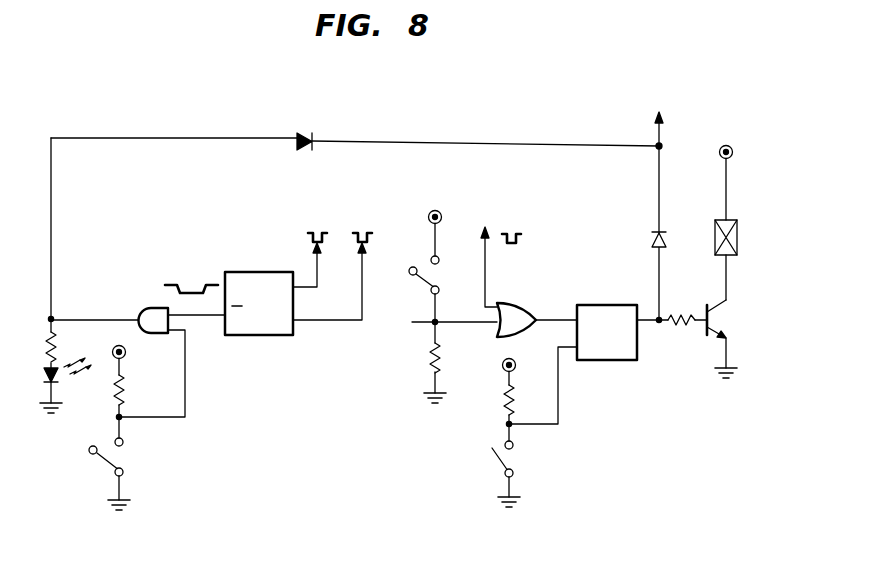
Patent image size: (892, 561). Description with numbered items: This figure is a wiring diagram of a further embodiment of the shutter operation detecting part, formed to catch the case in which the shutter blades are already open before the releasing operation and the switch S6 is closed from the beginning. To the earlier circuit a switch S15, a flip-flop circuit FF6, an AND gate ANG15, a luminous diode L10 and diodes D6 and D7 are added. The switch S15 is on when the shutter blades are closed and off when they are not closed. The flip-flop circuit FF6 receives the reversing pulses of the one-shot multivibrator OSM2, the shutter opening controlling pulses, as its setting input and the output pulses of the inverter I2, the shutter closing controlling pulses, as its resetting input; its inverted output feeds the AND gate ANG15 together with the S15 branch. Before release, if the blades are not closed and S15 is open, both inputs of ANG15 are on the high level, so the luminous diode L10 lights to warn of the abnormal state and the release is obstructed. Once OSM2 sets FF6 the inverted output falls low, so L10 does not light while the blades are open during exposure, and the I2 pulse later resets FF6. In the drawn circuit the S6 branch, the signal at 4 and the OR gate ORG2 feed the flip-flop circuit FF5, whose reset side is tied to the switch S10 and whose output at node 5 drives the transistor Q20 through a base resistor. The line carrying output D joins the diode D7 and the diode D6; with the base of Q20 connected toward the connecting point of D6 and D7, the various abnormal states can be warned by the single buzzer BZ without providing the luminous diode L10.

The diode D6 is at (308, 155).
The luminous diode L10 is at (65, 372).
The AND gate ANG15 is at (138, 362).
The switch S15 is at (122, 428).
The flip-flop circuit FF6 is at (259, 320).
The one-shot multivibrator OSM2 is at (315, 245).
The inverter I2 is at (332, 262).
The switch S6 is at (453, 307).
The signal input 4 is at (498, 254).
The OR gate ORG2 is at (535, 309).
The flip-flop FF5 is at (573, 364).
The switch S10 is at (517, 433).
The node 5 is at (672, 331).
The signal output D is at (660, 204).
The diode D7 is at (643, 242).
The buzzer BZ is at (711, 223).
The transistor Q20 is at (726, 339).